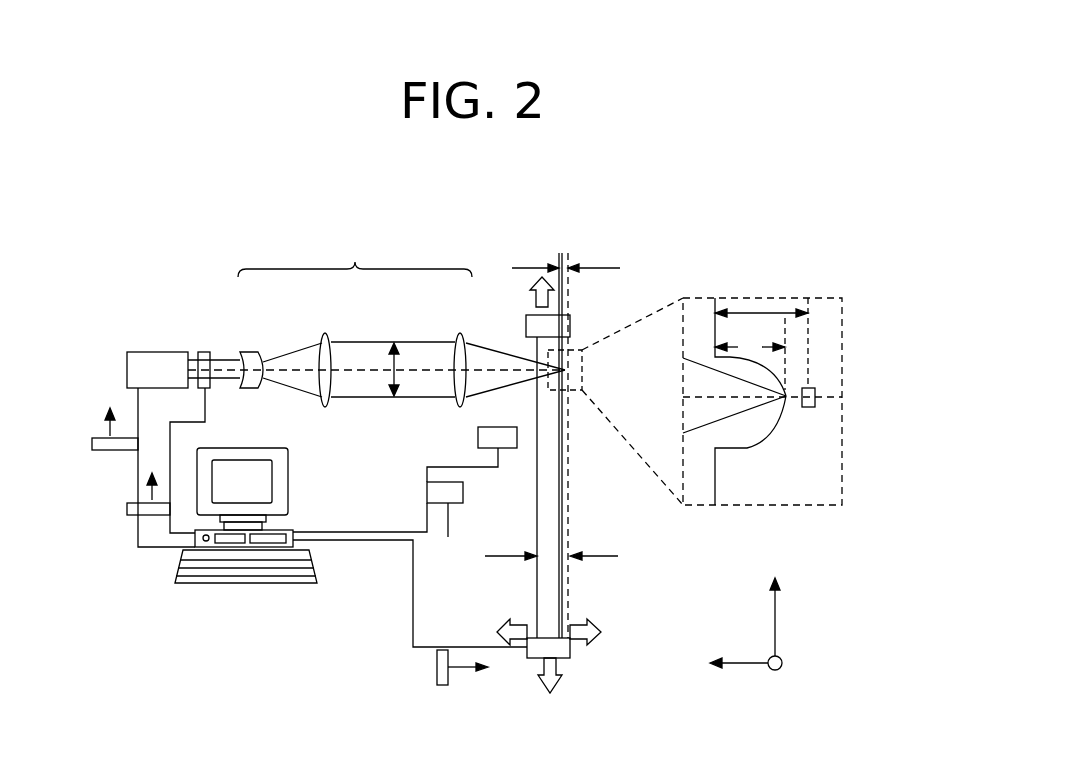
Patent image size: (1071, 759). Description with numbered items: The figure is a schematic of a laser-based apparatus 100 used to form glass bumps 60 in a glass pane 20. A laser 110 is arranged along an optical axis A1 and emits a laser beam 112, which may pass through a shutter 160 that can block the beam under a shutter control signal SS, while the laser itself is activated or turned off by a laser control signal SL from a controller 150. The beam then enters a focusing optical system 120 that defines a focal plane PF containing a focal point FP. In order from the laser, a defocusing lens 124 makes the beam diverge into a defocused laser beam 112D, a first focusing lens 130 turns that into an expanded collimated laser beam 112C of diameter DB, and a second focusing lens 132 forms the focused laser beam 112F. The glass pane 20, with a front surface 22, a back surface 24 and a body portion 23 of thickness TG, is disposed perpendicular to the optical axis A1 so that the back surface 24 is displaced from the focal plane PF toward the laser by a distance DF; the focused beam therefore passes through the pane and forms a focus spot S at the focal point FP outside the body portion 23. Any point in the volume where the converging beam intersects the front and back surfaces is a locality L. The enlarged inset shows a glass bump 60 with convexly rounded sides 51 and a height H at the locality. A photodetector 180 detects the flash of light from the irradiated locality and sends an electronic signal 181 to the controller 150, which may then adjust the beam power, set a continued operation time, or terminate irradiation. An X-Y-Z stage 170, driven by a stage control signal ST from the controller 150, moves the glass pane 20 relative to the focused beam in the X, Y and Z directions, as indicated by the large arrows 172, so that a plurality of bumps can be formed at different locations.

The apparatus 100 is at (143, 268).
The laser 110 is at (177, 385).
The laser beam 112 is at (222, 357).
The defocusing lens 124 is at (240, 351).
The defocused laser beam 112D is at (291, 352).
The first focusing lens 130 is at (328, 334).
The collimated laser beam 112C is at (381, 342).
The second focusing lens 132 is at (462, 335).
The focused laser beam 112F is at (494, 351).
The beam diameter DB is at (396, 378).
The focusing optical system 120 is at (355, 250).
The optical axis A1 is at (363, 371).
The shutter 160 is at (206, 388).
The large arrows 172 is at (533, 283).
The distance DF is at (764, 312).
The focal plane PF is at (870, 320).
The body portion 23 is at (537, 530).
The back surface 24 is at (563, 595).
The locality L is at (535, 330).
The glass pane 20 is at (518, 500).
The front surface 22 is at (537, 405).
The X-Y-Z stage 170 is at (561, 648).
The stage control signal ST is at (437, 670).
The photodetector 180 is at (478, 437).
The electronic signal 181 is at (463, 490).
The thickness TG is at (570, 560).
The controller 150 is at (290, 480).
The laser control signal SL is at (118, 452).
The shutter control signal SS is at (145, 517).
The focal point FP is at (582, 350).
The height of modified region H is at (750, 354).
The glass bump 60 is at (763, 423).
The focus spot S is at (817, 393).
The convexly rounded sides 51 is at (793, 402).
The Y direction Y is at (773, 600).
The Z direction Z is at (715, 668).
The X direction X is at (799, 682).